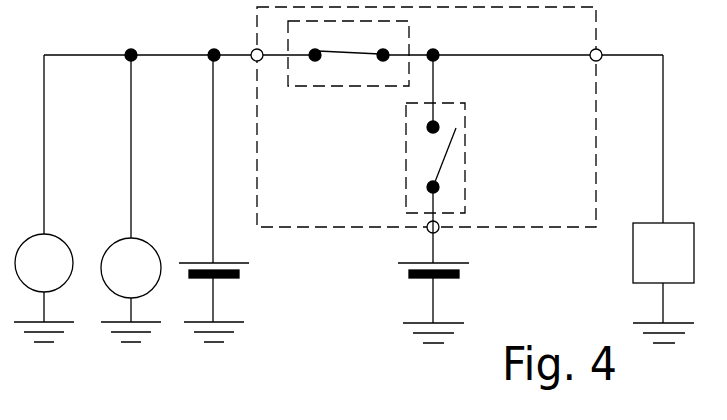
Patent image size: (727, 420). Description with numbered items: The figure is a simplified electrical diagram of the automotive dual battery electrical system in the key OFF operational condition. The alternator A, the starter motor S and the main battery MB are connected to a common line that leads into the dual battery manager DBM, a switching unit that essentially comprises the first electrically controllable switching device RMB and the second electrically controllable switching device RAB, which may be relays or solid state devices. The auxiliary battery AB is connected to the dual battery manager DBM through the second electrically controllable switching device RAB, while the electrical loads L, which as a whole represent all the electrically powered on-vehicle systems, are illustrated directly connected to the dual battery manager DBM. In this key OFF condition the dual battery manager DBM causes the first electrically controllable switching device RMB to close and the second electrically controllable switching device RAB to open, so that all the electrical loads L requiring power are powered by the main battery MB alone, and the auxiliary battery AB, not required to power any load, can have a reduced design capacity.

The dual battery manager DBM is at (426, 120).
The first electrically controllable switching device RMB is at (348, 68).
The second electrically controllable switching device RAB is at (460, 156).
The alternator A is at (75, 195).
The starter motor S is at (131, 198).
The main battery MB is at (231, 195).
The auxiliary battery AB is at (449, 302).
The electrical loads L is at (663, 199).